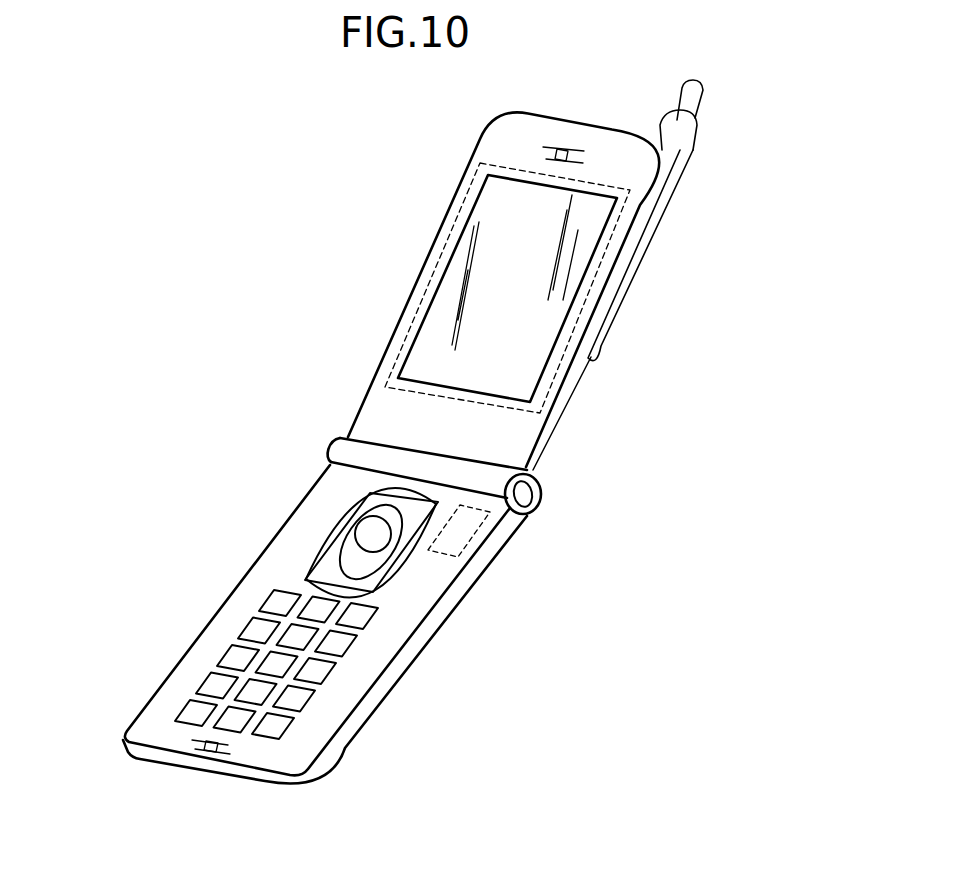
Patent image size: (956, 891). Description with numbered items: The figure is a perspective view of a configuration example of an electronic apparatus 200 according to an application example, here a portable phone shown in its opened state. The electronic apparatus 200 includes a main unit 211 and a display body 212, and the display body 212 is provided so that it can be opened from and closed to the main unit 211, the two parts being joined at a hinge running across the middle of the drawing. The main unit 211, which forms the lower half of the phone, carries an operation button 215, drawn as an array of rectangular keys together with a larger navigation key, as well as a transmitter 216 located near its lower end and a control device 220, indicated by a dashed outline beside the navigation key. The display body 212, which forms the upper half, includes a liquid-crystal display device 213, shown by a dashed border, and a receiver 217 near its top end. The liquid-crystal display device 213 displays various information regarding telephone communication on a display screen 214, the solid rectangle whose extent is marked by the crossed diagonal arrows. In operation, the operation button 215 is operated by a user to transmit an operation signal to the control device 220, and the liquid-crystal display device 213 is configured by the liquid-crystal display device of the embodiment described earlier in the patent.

The electronic apparatus 200 is at (412, 114).
The main unit 211 is at (303, 461).
The display body 212 is at (742, 99).
The liquid-crystal display device 213 is at (433, 272).
The display screen 214 is at (612, 202).
The operation button 215 is at (233, 718).
The transmitter 216 is at (207, 755).
The receiver 217 is at (565, 148).
The control device 220 is at (475, 537).